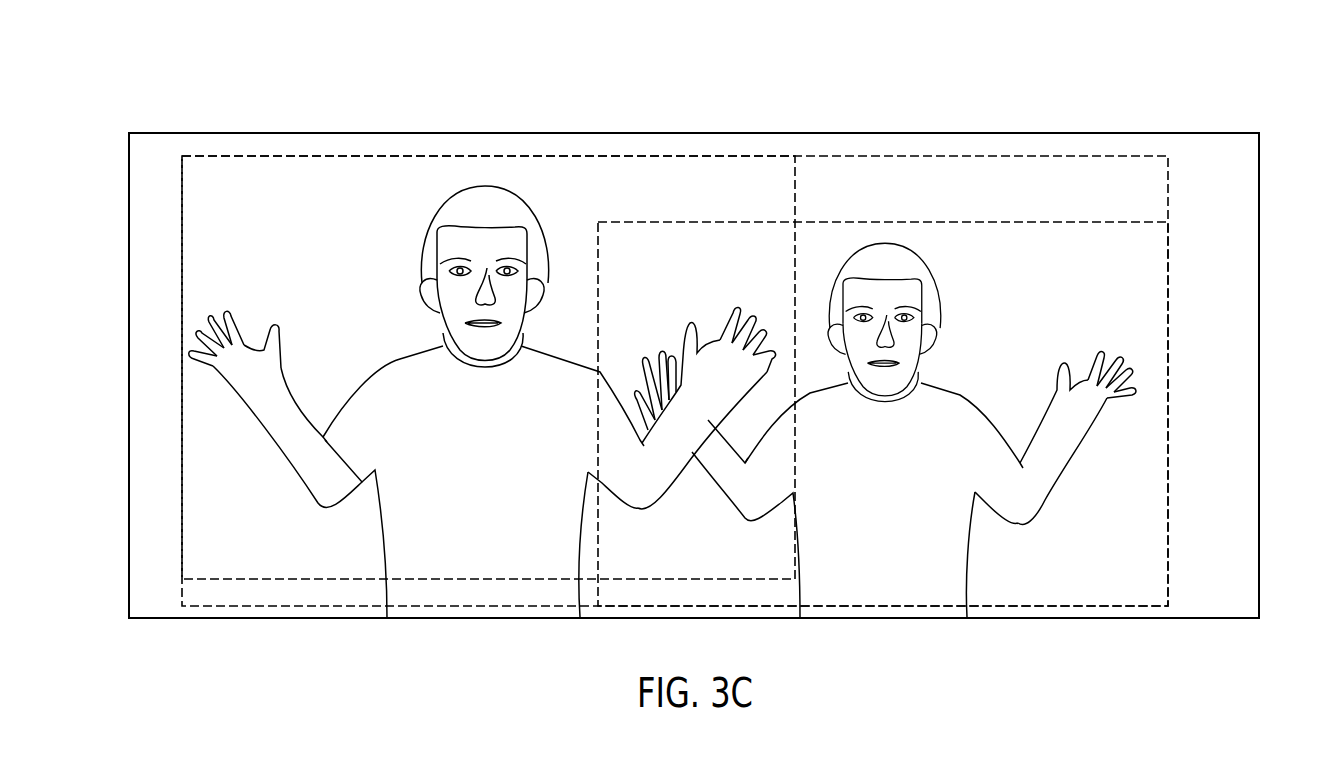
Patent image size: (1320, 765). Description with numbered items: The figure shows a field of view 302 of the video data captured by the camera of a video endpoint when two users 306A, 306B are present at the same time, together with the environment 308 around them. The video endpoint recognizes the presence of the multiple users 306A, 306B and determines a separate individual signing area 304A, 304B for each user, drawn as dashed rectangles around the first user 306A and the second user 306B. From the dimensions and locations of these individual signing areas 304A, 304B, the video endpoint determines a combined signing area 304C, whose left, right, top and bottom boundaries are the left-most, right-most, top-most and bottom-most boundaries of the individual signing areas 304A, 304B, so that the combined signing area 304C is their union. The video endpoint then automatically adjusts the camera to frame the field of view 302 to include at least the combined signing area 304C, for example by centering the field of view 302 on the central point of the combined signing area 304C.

The field of view 302 is at (1049, 112).
The environment 308 is at (1250, 175).
The individual signing area 304A is at (182, 366).
The individual signing area 304B is at (938, 222).
The combined signing area 304C is at (1168, 200).
The user 306A is at (372, 328).
The user 306B is at (1005, 362).